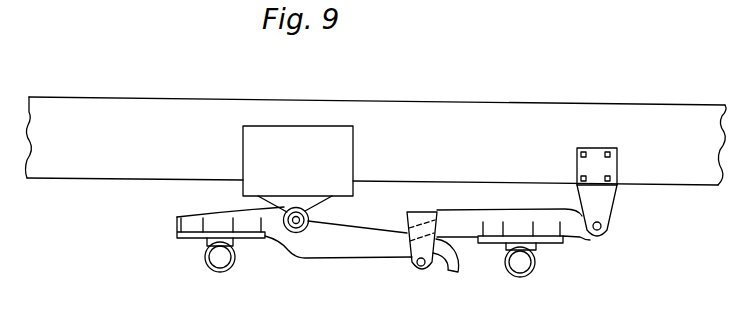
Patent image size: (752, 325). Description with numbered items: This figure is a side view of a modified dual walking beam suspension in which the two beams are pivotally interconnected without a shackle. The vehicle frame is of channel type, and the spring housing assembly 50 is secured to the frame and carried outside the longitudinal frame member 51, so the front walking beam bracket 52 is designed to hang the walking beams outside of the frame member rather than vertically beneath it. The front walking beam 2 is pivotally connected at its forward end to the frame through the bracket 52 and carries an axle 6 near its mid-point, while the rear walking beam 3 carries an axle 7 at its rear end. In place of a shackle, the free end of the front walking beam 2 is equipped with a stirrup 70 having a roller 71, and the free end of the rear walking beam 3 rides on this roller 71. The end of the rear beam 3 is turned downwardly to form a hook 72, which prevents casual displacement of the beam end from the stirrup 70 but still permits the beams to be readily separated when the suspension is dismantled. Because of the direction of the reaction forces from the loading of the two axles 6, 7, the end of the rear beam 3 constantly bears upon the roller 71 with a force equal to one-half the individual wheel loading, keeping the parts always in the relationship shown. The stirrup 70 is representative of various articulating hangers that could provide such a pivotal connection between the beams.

The longitudinal frame member 51 is at (467, 107).
The spring housing assembly 50 is at (270, 143).
The front walking beam bracket 52 is at (598, 200).
The rear walking beam 3 is at (323, 258).
The front walking beam 2 is at (575, 238).
The axle 7 is at (206, 263).
The axle 6 is at (523, 278).
The stirrup 70 is at (421, 214).
The roller 71 is at (418, 268).
The hook 72 is at (447, 272).